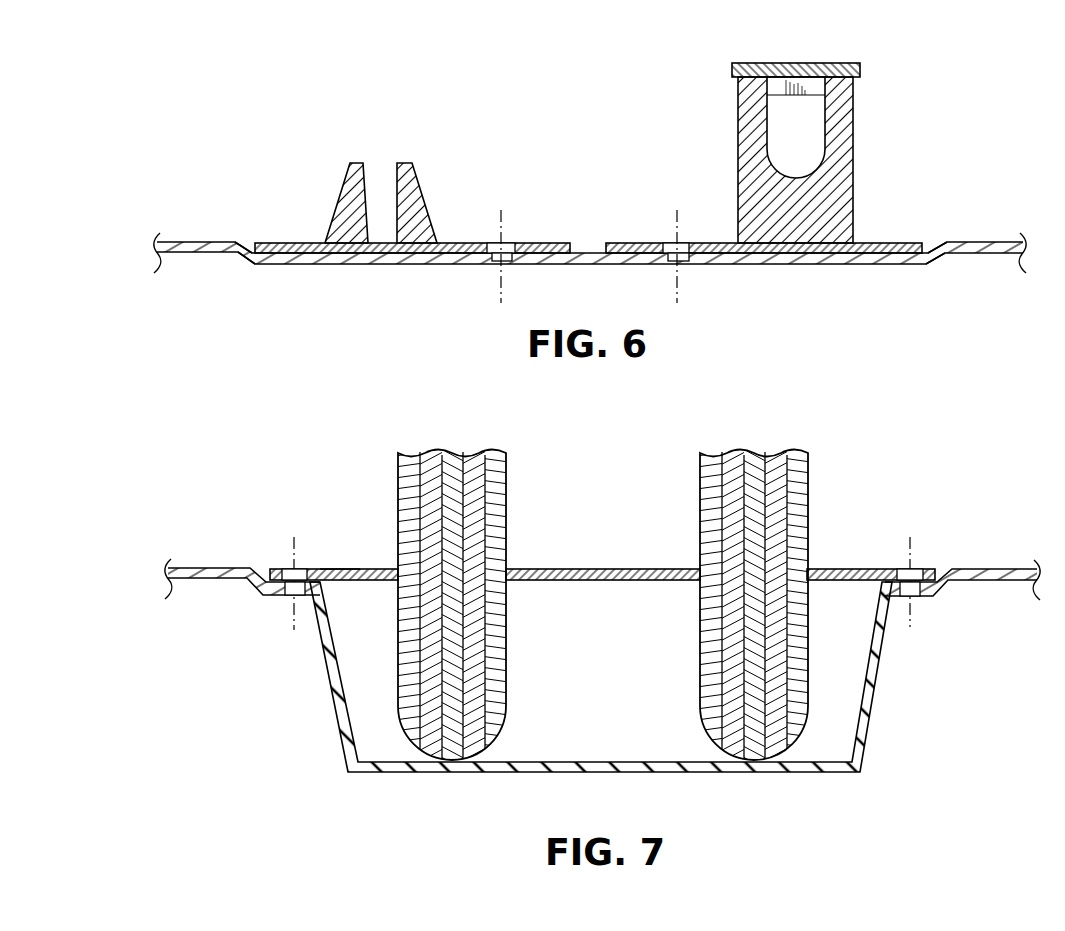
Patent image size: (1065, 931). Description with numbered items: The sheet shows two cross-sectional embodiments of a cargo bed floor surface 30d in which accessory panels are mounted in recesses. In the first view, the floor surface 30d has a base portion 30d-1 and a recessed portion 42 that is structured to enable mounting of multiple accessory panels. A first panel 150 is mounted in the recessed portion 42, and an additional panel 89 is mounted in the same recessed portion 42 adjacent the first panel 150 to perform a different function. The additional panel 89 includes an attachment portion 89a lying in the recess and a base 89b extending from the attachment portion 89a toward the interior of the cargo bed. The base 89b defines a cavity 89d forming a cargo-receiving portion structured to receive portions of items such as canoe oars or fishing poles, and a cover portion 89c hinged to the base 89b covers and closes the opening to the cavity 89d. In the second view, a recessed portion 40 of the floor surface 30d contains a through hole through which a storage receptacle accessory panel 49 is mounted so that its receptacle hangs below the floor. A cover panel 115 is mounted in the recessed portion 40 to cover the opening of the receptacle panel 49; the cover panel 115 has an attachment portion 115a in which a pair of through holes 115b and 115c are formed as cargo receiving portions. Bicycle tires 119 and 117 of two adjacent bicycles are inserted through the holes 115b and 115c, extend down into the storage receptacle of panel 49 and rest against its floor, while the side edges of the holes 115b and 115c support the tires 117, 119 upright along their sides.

In FIG. 6, the floor surface 30d is at (995, 238).
In FIG. 6, the base portion 30d-1 is at (942, 240).
In FIG. 6, the recessed portion 42 is at (239, 266).
In FIG. 6, the additional panel 89 is at (796, 130).
In FIG. 6, the attachment portion 89a is at (868, 258).
In FIG. 6, the base 89b is at (845, 190).
In FIG. 6, the cover portion 89c is at (813, 66).
In FIG. 6, the cavity 89d is at (783, 130).
In FIG. 6, the first panel 150 is at (343, 187).
In FIG. 7, the recessed portion 40 is at (266, 603).
In FIG. 7, the accessory panel 49 is at (346, 773).
In FIG. 7, the cover panel 115 is at (595, 518).
In FIG. 7, the attachment portion 115a is at (358, 566).
In FIG. 7, the through hole 115b is at (390, 566).
In FIG. 7, the through hole 115c is at (814, 568).
In FIG. 7, the bicycle tire 117 is at (780, 497).
In FIG. 7, the bicycle tire 119 is at (480, 497).